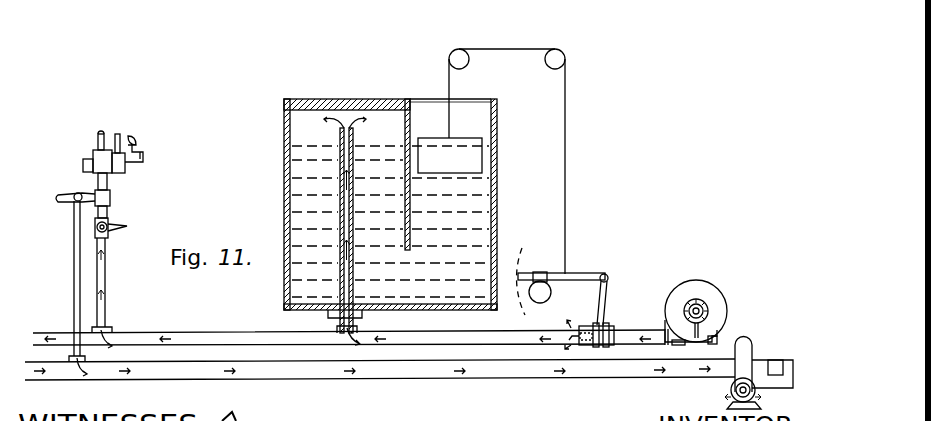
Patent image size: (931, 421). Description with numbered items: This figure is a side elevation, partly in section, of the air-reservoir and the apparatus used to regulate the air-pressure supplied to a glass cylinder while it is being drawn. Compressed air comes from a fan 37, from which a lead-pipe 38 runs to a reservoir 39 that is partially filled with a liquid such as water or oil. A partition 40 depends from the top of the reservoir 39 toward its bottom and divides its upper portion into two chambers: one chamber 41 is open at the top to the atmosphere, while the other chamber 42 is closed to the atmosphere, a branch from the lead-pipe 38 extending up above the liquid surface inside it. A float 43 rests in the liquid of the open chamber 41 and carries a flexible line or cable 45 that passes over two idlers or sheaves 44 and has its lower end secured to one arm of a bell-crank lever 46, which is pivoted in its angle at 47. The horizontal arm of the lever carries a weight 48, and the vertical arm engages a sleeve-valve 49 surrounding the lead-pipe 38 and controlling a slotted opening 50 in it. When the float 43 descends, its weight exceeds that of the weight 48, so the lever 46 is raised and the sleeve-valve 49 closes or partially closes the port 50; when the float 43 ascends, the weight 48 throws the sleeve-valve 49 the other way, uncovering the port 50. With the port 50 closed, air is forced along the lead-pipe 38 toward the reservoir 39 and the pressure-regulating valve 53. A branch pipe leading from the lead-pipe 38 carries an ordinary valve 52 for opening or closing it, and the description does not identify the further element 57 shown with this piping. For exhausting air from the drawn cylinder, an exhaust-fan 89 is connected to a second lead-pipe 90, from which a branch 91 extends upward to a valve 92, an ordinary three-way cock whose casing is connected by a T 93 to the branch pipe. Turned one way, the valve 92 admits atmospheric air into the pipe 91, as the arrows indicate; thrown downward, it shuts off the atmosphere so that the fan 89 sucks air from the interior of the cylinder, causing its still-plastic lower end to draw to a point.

The fan 37 is at (674, 284).
The lead-pipe 38 is at (349, 328).
The reservoir 39 is at (390, 192).
The partition 40 is at (410, 220).
The open chamber 41 is at (450, 117).
The closed chamber 42 is at (332, 231).
The float 43 is at (450, 155).
The idlers or sheaves 44 is at (560, 62).
The flexible line or cable 45 is at (507, 154).
The bell-crank lever 46 is at (587, 273).
The pivot 47 is at (608, 275).
The weight 48 is at (539, 272).
The sleeve-valve 49 is at (610, 326).
The slotted opening 50 is at (577, 332).
The valve 52 is at (127, 229).
The pressure-regulating valve 53 is at (102, 163).
The pipe 57 is at (106, 273).
The exhaust-fan 89 is at (748, 357).
The lead-pipe 90 is at (380, 383).
The branch pipe 91 is at (75, 271).
The valve 92 is at (56, 198).
The T 93 is at (110, 197).